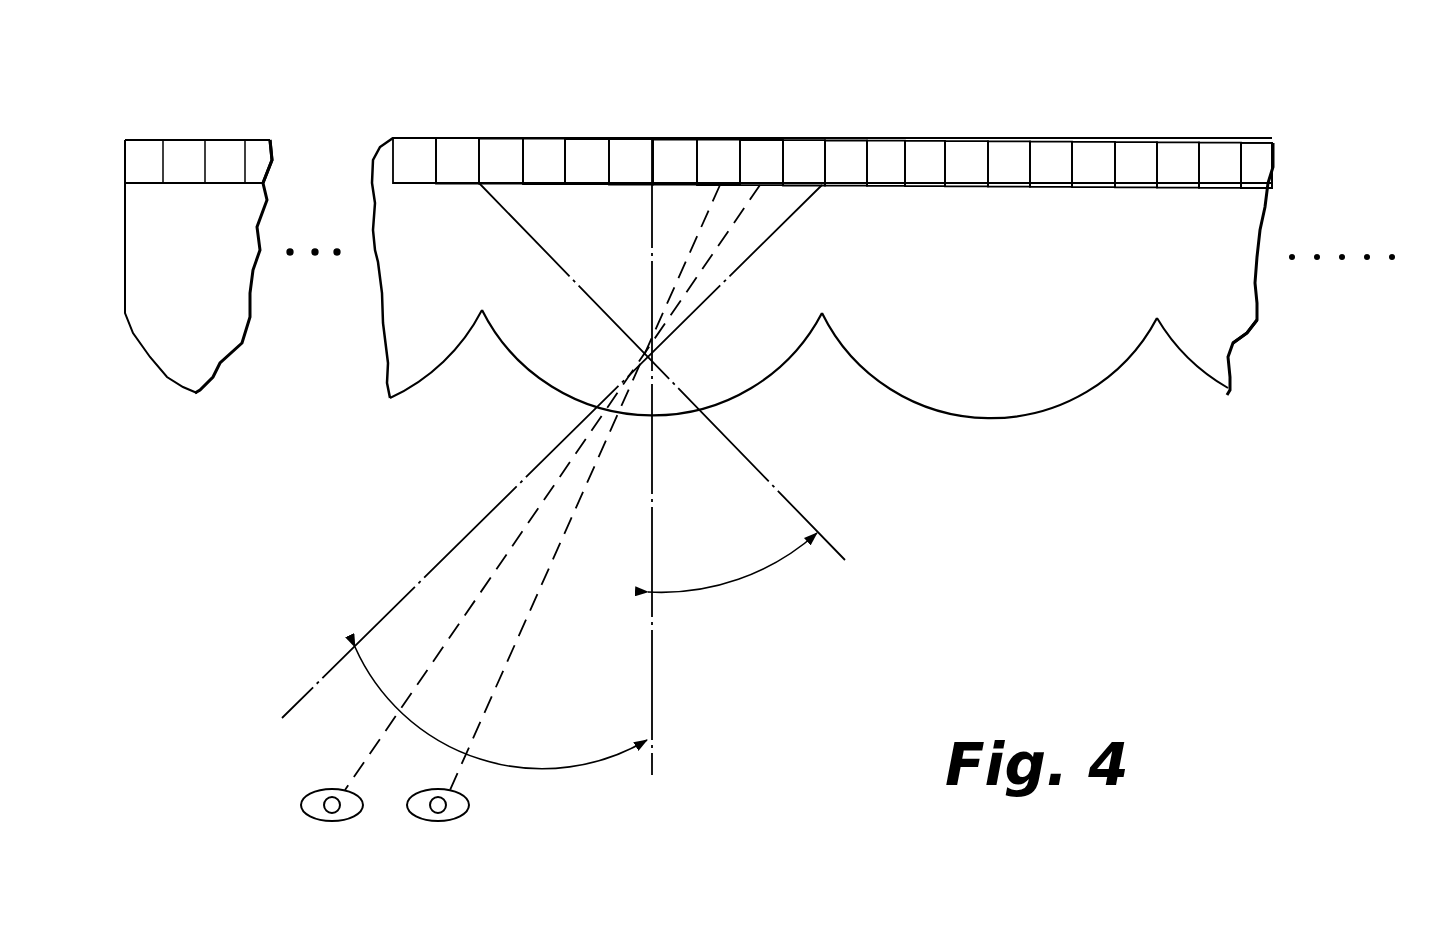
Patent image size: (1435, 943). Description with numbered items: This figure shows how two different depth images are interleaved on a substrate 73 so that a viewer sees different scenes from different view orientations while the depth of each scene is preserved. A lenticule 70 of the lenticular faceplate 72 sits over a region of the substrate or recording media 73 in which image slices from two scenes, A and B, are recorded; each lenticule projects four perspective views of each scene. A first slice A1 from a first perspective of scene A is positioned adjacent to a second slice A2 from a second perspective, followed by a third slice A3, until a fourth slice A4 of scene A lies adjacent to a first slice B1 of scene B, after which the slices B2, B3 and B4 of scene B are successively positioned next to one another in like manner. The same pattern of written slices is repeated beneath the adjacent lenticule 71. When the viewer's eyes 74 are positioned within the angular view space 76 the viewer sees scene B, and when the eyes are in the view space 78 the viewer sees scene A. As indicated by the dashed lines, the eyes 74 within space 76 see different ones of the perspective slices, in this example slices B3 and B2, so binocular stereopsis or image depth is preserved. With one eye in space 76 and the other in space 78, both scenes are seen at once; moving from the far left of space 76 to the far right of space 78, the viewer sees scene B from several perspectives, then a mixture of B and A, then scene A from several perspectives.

The lenticule 70 is at (732, 407).
The adjacent lenticule 71 is at (1012, 420).
The lenticular faceplate 72 is at (1258, 298).
The substrate 73 is at (1275, 165).
The viewer's eyes 74 is at (418, 820).
The angular view space 76 is at (537, 768).
The view space 78 is at (708, 593).
The first slice of scene A A1 is at (503, 167).
The second slice of scene A A2 is at (547, 158).
The third slice of scene A A3 is at (590, 167).
The fourth slice of scene A A4 is at (631, 158).
The first slice of scene B B1 is at (680, 167).
The second slice of scene B B2 is at (714, 158).
The third slice of scene B B3 is at (418, 167).
The fourth slice of scene B B4 is at (460, 158).